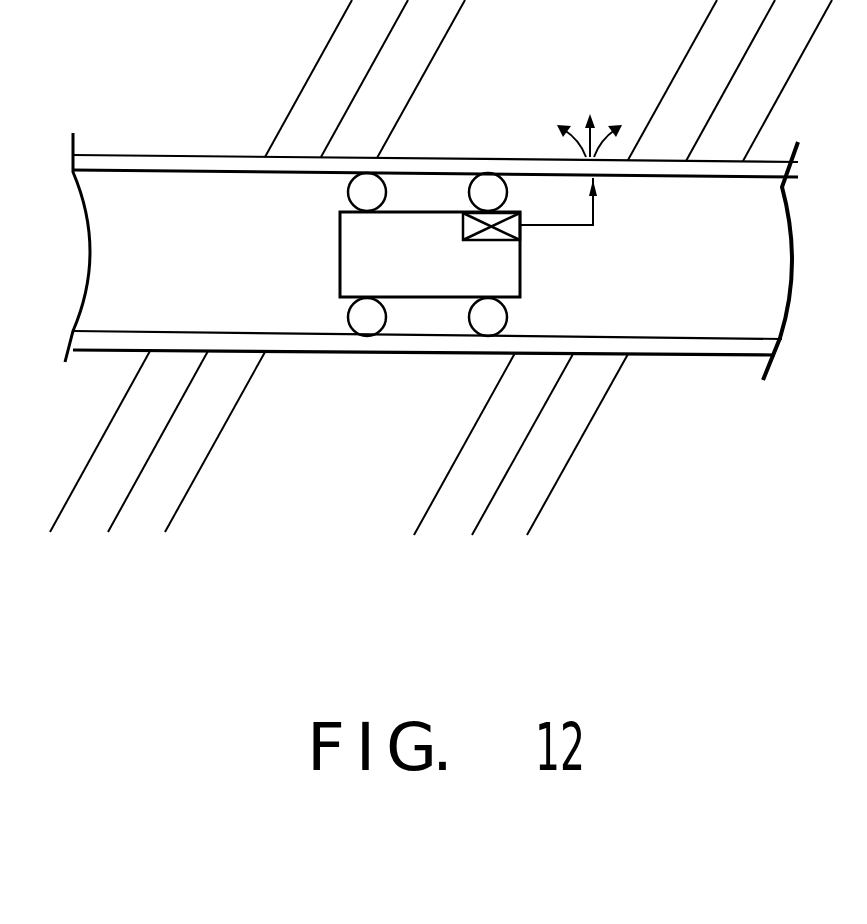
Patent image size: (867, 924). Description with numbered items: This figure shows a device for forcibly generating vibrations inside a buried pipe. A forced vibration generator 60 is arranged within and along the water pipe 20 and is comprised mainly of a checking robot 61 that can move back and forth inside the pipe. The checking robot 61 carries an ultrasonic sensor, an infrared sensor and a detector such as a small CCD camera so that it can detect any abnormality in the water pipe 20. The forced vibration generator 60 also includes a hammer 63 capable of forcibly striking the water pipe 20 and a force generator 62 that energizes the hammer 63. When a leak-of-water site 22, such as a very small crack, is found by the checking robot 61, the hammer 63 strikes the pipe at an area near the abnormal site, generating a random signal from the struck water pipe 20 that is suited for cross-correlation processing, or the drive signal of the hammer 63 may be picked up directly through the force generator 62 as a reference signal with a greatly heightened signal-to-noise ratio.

The water pipe 20 is at (521, 157).
The leak-of-water site 22 is at (601, 118).
The forced vibration generator 60 is at (340, 272).
The checking robot 61 is at (417, 300).
The force generator 62 is at (463, 228).
The hammer 63 is at (548, 235).